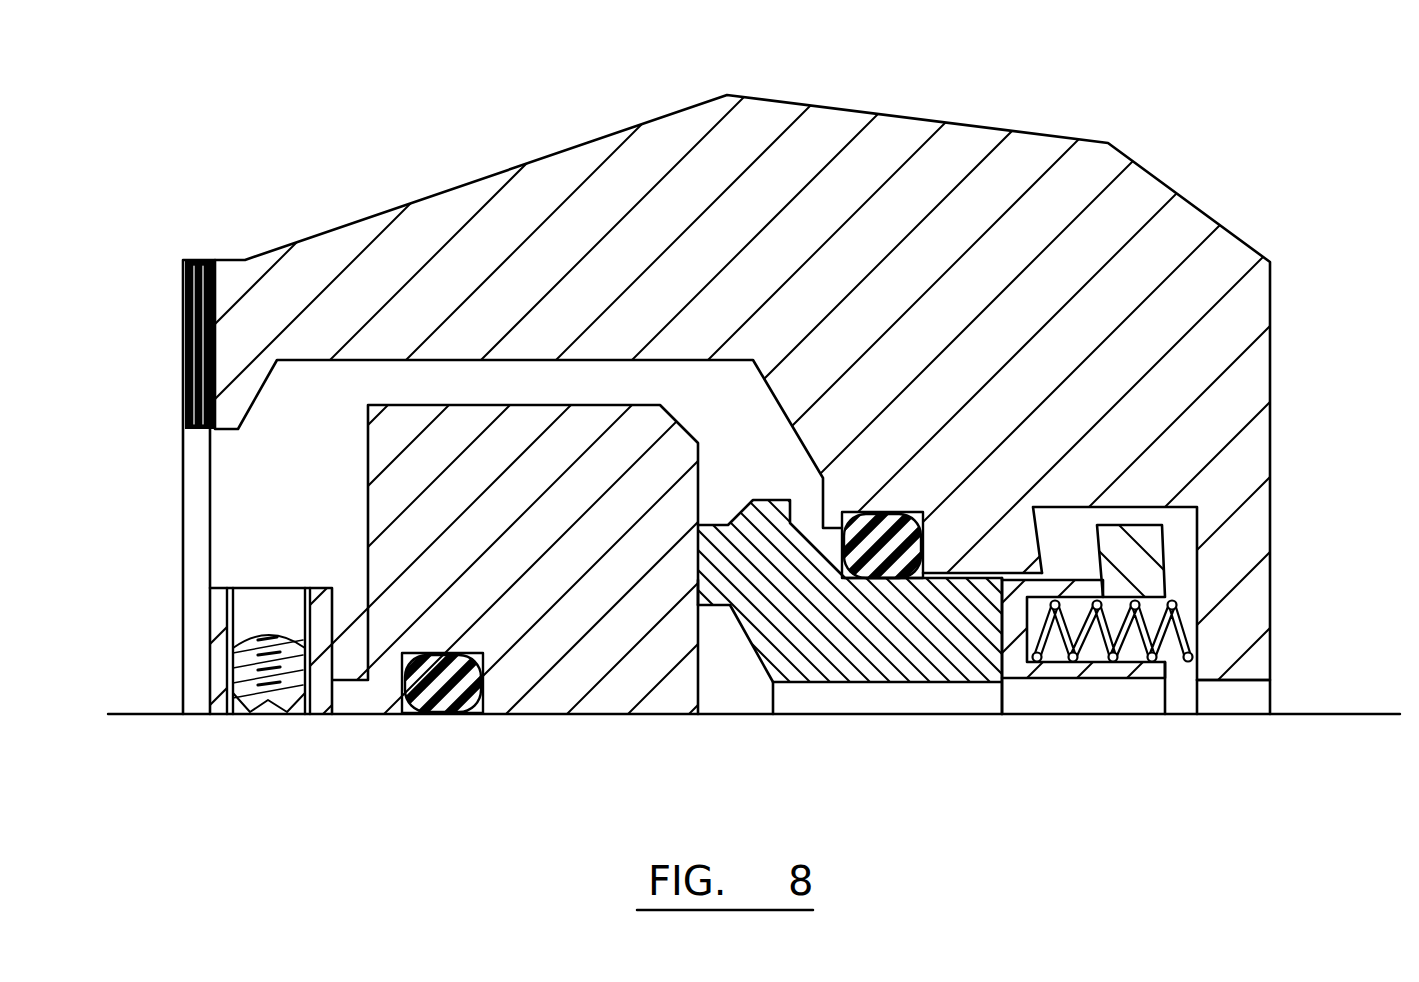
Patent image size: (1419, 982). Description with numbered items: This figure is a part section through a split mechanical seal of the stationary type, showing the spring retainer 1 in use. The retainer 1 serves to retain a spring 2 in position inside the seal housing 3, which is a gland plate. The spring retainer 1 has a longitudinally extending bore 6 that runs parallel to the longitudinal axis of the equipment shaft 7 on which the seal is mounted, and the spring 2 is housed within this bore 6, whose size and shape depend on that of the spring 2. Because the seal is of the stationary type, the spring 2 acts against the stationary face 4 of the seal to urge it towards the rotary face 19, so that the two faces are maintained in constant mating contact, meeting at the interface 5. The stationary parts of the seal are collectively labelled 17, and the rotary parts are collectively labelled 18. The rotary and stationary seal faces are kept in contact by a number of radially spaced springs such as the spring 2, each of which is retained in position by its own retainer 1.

The spring retainer 1 is at (1155, 550).
The spring 2 is at (1180, 623).
The seal housing 3 is at (1130, 218).
The seal face 4 is at (757, 633).
The interface 5 is at (698, 585).
The bore 6 is at (1137, 648).
The equipment shaft 7 is at (796, 822).
The stationary parts 17 is at (1218, 668).
The rotary parts 18 is at (385, 682).
The rotary face 19 is at (438, 508).